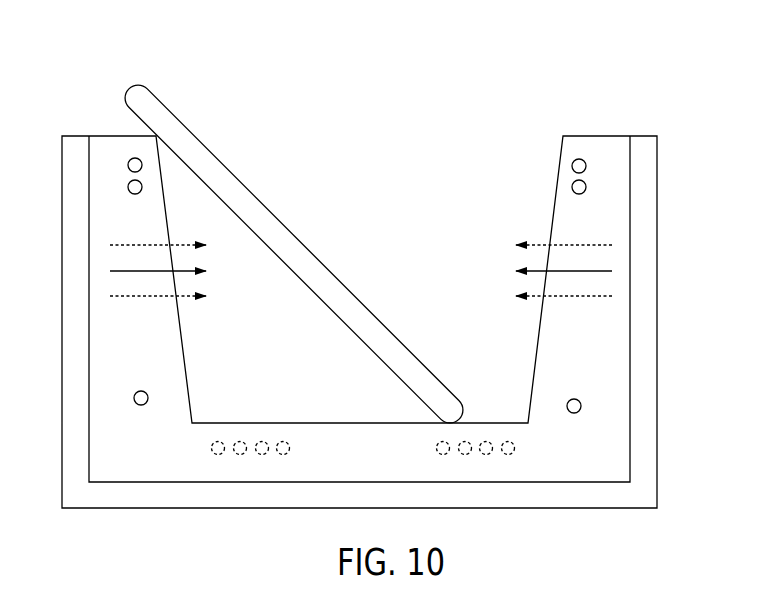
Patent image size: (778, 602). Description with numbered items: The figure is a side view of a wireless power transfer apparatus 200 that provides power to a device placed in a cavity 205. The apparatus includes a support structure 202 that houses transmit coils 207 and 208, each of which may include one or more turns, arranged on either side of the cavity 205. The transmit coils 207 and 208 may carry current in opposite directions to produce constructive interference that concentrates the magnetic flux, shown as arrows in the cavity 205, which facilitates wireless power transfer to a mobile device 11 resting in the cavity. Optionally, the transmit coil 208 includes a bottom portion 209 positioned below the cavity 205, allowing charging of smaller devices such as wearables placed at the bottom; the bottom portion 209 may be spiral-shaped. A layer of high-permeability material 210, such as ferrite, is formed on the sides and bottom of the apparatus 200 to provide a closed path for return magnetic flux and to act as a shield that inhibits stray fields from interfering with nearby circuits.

The wireless power transfer apparatus 200 is at (241, 81).
The mobile device 11 is at (222, 158).
The cavity 205 is at (402, 144).
The support structure 202 is at (629, 134).
The layer of high-permeability material 210 is at (659, 206).
The transmit coil 207 is at (119, 155).
The transmit coil 208 is at (138, 383).
The bottom portion 209 is at (206, 447).